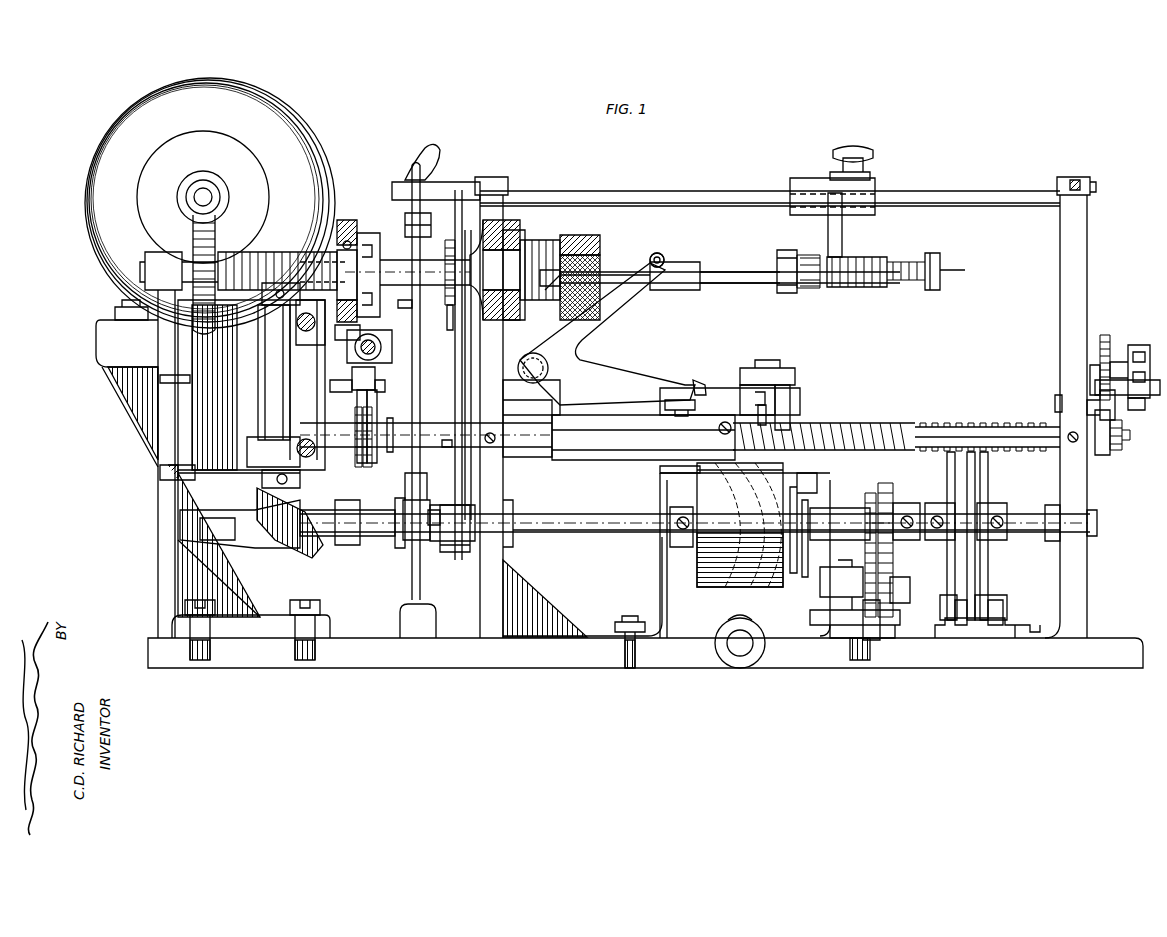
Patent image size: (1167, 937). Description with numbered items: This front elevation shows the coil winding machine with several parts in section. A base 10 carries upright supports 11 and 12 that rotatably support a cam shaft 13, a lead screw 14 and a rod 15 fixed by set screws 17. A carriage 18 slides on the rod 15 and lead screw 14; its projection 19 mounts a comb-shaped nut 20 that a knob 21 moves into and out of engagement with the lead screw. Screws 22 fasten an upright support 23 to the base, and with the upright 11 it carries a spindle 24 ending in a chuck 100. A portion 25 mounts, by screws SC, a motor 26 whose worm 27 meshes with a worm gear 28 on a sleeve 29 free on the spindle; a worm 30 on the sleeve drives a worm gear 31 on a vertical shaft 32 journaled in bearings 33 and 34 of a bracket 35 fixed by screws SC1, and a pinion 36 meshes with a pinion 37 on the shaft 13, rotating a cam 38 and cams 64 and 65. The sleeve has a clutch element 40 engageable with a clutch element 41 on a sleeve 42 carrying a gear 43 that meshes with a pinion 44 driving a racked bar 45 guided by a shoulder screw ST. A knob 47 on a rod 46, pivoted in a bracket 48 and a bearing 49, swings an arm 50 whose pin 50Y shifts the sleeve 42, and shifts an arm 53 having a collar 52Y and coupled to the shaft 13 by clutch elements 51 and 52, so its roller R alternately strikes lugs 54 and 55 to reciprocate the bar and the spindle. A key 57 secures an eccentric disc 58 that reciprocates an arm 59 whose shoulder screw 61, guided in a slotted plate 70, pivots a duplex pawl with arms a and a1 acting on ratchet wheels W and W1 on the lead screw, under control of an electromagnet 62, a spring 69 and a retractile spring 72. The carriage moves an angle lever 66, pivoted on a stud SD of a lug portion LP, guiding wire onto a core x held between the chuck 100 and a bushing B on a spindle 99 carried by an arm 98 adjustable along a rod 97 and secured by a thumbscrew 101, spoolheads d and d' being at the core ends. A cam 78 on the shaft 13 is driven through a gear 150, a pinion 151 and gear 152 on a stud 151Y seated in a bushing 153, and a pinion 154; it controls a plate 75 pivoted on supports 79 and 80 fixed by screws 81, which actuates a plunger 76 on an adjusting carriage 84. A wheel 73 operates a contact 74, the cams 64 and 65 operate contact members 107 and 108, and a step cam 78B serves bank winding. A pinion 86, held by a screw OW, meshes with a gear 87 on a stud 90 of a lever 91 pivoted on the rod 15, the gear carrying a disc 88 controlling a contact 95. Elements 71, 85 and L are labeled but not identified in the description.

The base 10 is at (462, 655).
The upright support 11 is at (492, 625).
The upright support 12 is at (1078, 568).
The cam shaft 13 is at (580, 532).
The lead screw 14 is at (882, 423).
The rod 15 is at (938, 427).
The set screws 17 is at (492, 443).
The carriage 18 is at (600, 460).
The projection 19 is at (720, 388).
The comb-shaped member 20 is at (790, 413).
The knob 21 is at (767, 368).
The screws 22 is at (212, 596).
The upright support 23 is at (160, 558).
The spindle 24 is at (508, 258).
The portion 25 is at (104, 347).
The motor 26 is at (98, 153).
The worm 27 is at (210, 188).
The worm gear 28 is at (192, 236).
The sleeve 29 is at (240, 262).
The worm 30 is at (272, 248).
The worm gear 31 is at (310, 265).
The vertically disposed shaft 32 is at (275, 410).
The bearing 33 is at (251, 385).
The bearing 34 is at (256, 450).
The bracket 35 is at (225, 470).
The pinion 36 is at (305, 492).
The pinion 37 is at (305, 547).
The cam 38 is at (704, 572).
The clutch element 40 is at (360, 225).
The clutch element 41 is at (374, 233).
The sleeve 42 is at (438, 317).
The gear 43 is at (446, 240).
The pinion 44 is at (510, 318).
The bar 45 is at (470, 355).
The rod 46 is at (424, 590).
The knob 47 is at (428, 148).
The bracket 48 is at (452, 182).
The bearing 49 is at (436, 615).
The arm 50 is at (426, 218).
The pin 50Y is at (398, 312).
The clutch element 51 is at (345, 538).
The clutch element 52 is at (372, 540).
The collar 52Y is at (400, 550).
The arm 53 is at (428, 496).
The lug 54 is at (452, 545).
The lug 55 is at (448, 440).
The key member 57 is at (292, 300).
The eccentric disc 58 is at (340, 240).
The arm 59 is at (340, 340).
The shoulder screw 61 is at (388, 389).
The electromagnet 62 is at (377, 372).
The cam 64 is at (947, 560).
The cam 65 is at (989, 572).
The angle lever 66 is at (625, 382).
The spring 69 is at (337, 377).
The plate 70 is at (310, 356).
The pivot 71 is at (308, 438).
The retractile spring 72 is at (375, 346).
The wheel 73 is at (975, 480).
The contact 74 is at (962, 600).
The plate 75 is at (805, 465).
The plunger 76 is at (666, 406).
The cam 78 is at (794, 573).
The step cam 78B is at (802, 580).
The upright support 79 is at (660, 583).
The upright support 80 is at (830, 605).
The screws 81 is at (626, 618).
The carriage 84 is at (730, 415).
The pin 85 is at (768, 408).
The pinion 86 is at (1104, 455).
The gear 87 is at (1106, 335).
The disc 88 is at (1138, 410).
The stud 90 is at (1055, 400).
The lever member 91 is at (1090, 402).
The contact 95 is at (1148, 352).
The rod 97 is at (934, 190).
The supporting arm 98 is at (840, 240).
The spindle 99 is at (940, 252).
The chuck 100 is at (632, 262).
The thumbscrew 101 is at (845, 150).
The contact member 107 is at (948, 630).
The contact member 108 is at (990, 630).
The gear 150 is at (888, 483).
The pinion 151 is at (886, 640).
The stud 151Y is at (905, 606).
The gear 152 is at (865, 560).
The bushing 153 is at (818, 622).
The pinion 154 is at (870, 493).
The screws SC is at (114, 313).
The screws SC1 is at (190, 383).
The shoulder screw ST is at (454, 332).
The stud SD is at (529, 379).
The lug portion LP is at (552, 410).
The lug L is at (706, 385).
The ratchet wheel W is at (426, 440).
The ratchet wheel W1 is at (344, 440).
The pawl arm a is at (372, 402).
The pawl arm a1 is at (356, 408).
The roller R is at (436, 510).
The spoolhead d is at (662, 251).
The spoolhead d' is at (777, 262).
The bushing B is at (805, 258).
The core x is at (709, 268).
The screw OW is at (1120, 445).